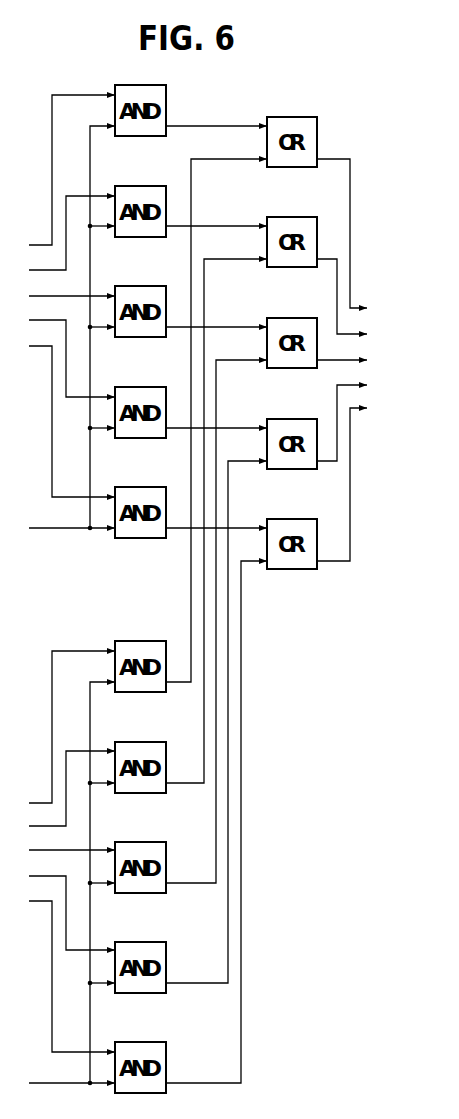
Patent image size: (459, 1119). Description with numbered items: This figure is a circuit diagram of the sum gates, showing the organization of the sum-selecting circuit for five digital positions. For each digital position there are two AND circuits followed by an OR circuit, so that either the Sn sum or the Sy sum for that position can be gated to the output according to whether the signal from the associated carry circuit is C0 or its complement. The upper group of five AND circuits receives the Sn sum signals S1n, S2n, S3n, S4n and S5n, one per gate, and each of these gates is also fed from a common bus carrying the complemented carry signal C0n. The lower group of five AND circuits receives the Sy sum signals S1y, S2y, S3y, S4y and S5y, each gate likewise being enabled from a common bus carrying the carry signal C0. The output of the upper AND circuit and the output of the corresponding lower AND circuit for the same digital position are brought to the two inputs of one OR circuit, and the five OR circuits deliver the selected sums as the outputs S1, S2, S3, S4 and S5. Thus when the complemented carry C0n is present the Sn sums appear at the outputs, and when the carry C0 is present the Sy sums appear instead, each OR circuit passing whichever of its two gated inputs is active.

The first-position Sn sum signal S1n is at (72, 170).
The second-position Sn sum signal S2n is at (72, 233).
The third-position Sn sum signal S3n is at (72, 285).
The fourth-position Sn sum signal S4n is at (72, 347).
The fifth-position Sn sum signal S5n is at (72, 410).
The complemented carry signal C0-bar C0n is at (39, 503).
The first-position Sy sum signal S1y is at (72, 727).
The second-position Sy sum signal S2y is at (72, 789).
The third-position Sy sum signal S3y is at (72, 839).
The fourth-position Sy sum signal S4y is at (72, 901).
The fifth-position Sy sum signal S5y is at (72, 965).
The carry signal C0 is at (72, 883).
The first-position sum output S1 is at (353, 240).
The second-position sum output S2 is at (353, 303).
The third-position sum output S3 is at (353, 361).
The fourth-position sum output S4 is at (353, 418).
The fifth-position sum output S5 is at (353, 479).